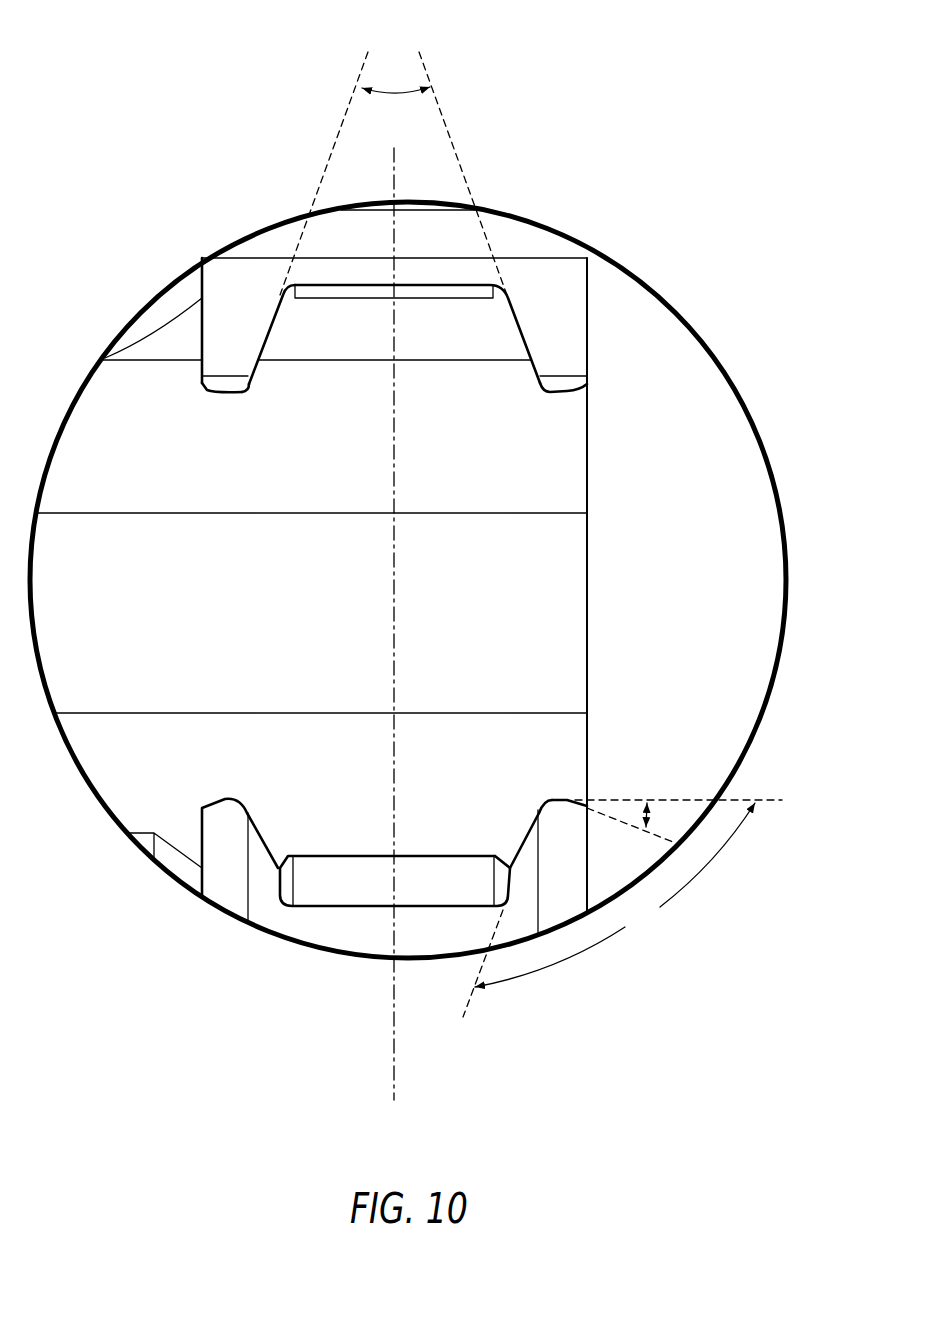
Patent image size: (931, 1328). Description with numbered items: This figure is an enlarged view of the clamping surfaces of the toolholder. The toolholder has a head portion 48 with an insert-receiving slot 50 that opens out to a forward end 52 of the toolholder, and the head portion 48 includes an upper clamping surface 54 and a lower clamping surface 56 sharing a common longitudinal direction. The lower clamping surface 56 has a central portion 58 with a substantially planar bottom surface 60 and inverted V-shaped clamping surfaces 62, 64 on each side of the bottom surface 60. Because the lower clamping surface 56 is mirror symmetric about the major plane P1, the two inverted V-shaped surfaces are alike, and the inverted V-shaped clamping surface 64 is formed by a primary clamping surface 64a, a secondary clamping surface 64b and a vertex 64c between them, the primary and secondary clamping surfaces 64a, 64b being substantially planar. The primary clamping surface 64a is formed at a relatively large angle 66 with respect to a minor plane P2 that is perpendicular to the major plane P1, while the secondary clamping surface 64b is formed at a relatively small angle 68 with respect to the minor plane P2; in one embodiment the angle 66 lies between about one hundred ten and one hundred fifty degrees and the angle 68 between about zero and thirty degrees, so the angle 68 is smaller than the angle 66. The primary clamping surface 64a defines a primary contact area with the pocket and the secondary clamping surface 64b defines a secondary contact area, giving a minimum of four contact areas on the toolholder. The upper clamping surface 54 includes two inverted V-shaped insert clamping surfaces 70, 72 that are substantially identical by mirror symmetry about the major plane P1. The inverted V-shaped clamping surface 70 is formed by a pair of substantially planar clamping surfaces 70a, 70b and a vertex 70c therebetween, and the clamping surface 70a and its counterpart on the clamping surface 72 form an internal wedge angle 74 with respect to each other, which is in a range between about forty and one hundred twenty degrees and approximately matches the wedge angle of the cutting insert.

The head portion 48 is at (677, 370).
The insert-receiving slot 50 is at (543, 578).
The forward end 52 is at (367, 930).
The upper clamping surface 54 is at (440, 342).
The lower clamping surface 56 is at (372, 780).
The central portion 58 is at (435, 840).
The bottom surface 60 is at (355, 903).
The inverted V-shaped clamping surface 62 is at (235, 783).
The inverted V-shaped clamping surface 64 is at (560, 806).
The primary clamping surface 64a is at (528, 840).
The secondary clamping surface 64b is at (557, 800).
The vertex 64c is at (545, 800).
The angle 66 is at (609, 910).
The angle 68 is at (648, 815).
The inverted V-shaped clamping surface 70 is at (237, 366).
The clamping surface 70a is at (272, 322).
The clamping surface 70b is at (208, 388).
The vertex 70c is at (247, 385).
The inverted V-shaped clamping surface 72 is at (567, 404).
The internal wedge angle 74 is at (393, 90).
The major plane P1 is at (395, 173).
The minor plane P2 is at (765, 800).